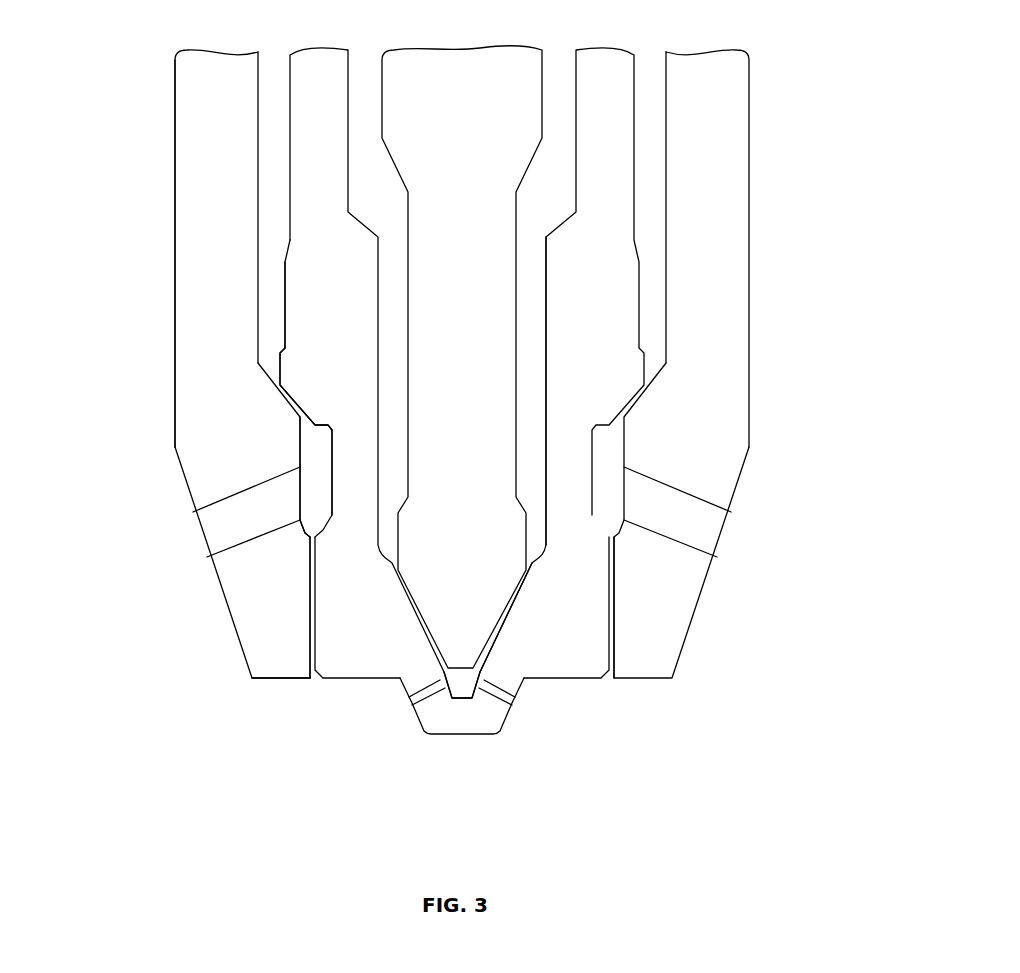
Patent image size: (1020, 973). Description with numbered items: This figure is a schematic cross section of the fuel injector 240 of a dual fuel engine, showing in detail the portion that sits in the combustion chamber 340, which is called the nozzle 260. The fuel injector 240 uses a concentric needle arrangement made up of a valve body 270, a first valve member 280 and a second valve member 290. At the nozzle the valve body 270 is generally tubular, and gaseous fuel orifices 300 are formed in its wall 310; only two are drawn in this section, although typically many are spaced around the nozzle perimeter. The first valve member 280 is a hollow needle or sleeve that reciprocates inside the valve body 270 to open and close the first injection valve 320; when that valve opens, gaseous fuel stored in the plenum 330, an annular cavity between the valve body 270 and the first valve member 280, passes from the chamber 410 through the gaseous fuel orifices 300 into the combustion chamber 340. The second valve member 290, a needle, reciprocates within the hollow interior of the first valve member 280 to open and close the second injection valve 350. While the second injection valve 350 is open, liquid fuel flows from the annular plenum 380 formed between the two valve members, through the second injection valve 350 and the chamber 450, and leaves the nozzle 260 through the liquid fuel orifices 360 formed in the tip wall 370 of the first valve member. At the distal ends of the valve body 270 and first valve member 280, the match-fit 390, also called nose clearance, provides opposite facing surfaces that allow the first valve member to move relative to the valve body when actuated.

The fuel injector 240 is at (823, 106).
The nozzle 260 is at (680, 658).
The valve body 270 is at (175, 131).
The first valve member 280 is at (303, 127).
The second valve member 290 is at (476, 290).
The gaseous fuel orifices 300 is at (238, 530).
The wall 310 is at (222, 197).
The first injection valve 320 is at (270, 392).
The plenum 330 is at (273, 276).
The combustion chamber 340 is at (258, 709).
The second injection valve 350 is at (517, 603).
The liquid fuel orifices 360 is at (502, 688).
The tip wall 370 is at (413, 672).
The annular plenum 380 is at (533, 358).
The match-fit 390 is at (320, 594).
The chamber 410 is at (322, 462).
The chamber 450 is at (467, 680).